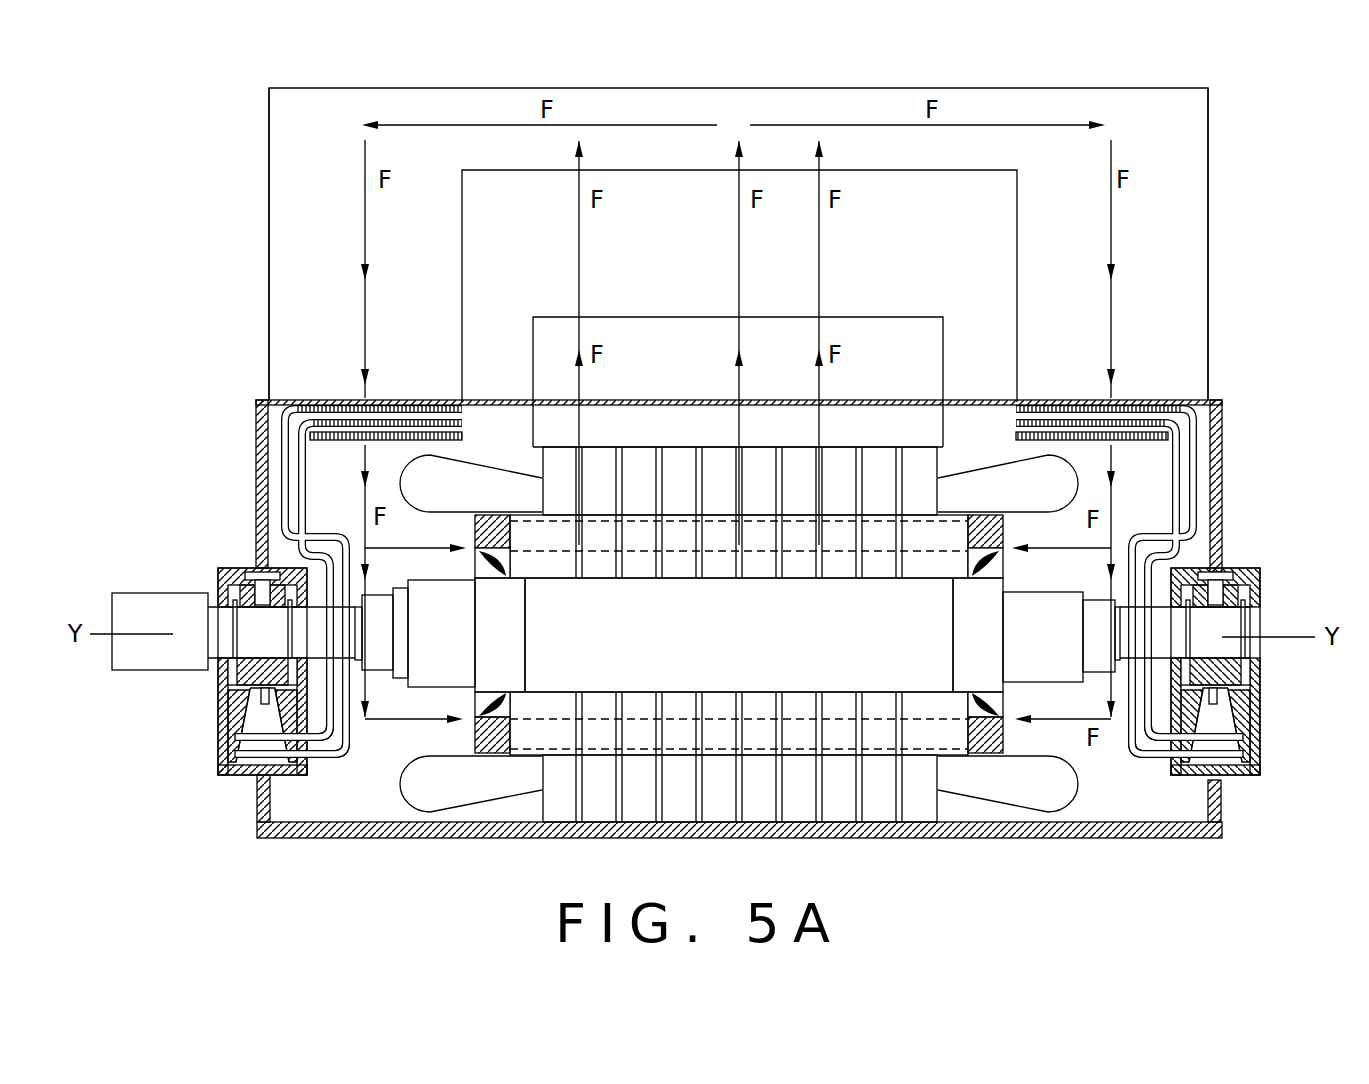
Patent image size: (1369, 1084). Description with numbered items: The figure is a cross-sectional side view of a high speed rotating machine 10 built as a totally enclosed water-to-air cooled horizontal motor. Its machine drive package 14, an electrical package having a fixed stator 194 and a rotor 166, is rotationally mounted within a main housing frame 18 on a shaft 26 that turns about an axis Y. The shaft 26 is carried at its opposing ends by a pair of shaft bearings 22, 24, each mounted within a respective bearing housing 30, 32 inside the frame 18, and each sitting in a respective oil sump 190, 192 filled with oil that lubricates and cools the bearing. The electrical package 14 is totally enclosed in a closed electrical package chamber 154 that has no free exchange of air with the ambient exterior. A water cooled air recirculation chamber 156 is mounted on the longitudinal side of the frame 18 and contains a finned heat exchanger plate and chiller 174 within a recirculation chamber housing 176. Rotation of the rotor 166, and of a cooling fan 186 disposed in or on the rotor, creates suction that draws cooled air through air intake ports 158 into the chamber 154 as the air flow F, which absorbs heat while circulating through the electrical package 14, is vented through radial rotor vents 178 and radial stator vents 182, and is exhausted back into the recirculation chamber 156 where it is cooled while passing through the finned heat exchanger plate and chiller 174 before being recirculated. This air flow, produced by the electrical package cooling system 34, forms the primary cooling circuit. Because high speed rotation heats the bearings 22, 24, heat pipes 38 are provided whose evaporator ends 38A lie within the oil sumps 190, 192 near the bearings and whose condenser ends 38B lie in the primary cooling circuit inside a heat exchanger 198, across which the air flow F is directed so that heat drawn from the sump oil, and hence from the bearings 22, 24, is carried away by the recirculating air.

The high speed rotating machine 10 is at (1265, 255).
The machine drive package 14 is at (719, 641).
The main housing frame 18 is at (1197, 412).
The shaft bearing 22 is at (1233, 596).
The shaft bearing 24 is at (242, 592).
The shaft 26 is at (318, 612).
The bearing housing 30 is at (1255, 672).
The bearing housing 32 is at (222, 694).
The electrical package cooling system 34 is at (220, 275).
The heat pipes 38 is at (300, 487).
The evaporator ends 38A is at (238, 755).
The condenser ends 38B is at (463, 428).
The electrical package chamber 154 is at (335, 827).
The water cooled air recirculation chamber 156 is at (305, 205).
The air intake port 158 is at (316, 386).
The rotor 166 is at (562, 732).
The finned heat exchanger plate and chiller 174 is at (905, 242).
The recirculation chamber housing 176 is at (1209, 207).
The radial rotor vents 178 is at (673, 540).
The radial stator vents 182 is at (622, 484).
The cooling fan 186 is at (482, 562).
The oil sump 190 is at (1218, 722).
The oil sump 192 is at (258, 714).
The stator 194 is at (601, 800).
The heat exchanger 198 is at (262, 410).